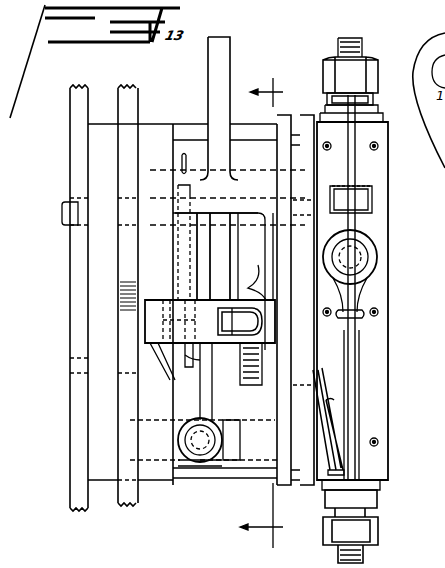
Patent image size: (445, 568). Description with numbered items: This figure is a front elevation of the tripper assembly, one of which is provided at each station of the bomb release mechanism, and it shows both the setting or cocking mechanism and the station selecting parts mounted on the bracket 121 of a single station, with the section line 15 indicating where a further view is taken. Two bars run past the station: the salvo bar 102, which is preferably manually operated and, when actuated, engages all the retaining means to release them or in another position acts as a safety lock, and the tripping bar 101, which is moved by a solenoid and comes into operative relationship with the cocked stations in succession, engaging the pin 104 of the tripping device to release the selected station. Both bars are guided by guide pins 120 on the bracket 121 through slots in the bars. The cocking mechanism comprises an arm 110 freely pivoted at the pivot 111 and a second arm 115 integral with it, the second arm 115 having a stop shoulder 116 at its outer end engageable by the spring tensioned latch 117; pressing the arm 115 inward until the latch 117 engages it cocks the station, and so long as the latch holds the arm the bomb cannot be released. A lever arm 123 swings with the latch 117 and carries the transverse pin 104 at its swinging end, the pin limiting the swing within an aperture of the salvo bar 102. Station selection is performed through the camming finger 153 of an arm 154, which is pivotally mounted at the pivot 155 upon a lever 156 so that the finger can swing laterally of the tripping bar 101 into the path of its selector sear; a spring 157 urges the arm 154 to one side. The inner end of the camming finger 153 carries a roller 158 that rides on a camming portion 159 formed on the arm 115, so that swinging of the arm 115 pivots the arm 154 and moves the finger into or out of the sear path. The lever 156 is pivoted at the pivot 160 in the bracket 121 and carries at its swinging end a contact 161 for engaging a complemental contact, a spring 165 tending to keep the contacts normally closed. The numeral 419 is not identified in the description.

The section line 15- 15 is at (272, 313).
The tripping bar 101 is at (138, 112).
The salvo bar 102 is at (78, 291).
The pin 104 is at (60, 212).
The arm 110 is at (225, 68).
The pivot 111 is at (444, 193).
The second arm 115 is at (335, 299).
The stop shoulder 116 is at (215, 238).
The latch 117 is at (215, 270).
The guide pins 120 is at (387, 203).
The bracket 121 is at (187, 132).
The lever arm 123 is at (182, 260).
The camming finger 153 is at (150, 330).
The arm 154 is at (200, 393).
The pivot 155 is at (168, 470).
The lever 156 is at (245, 468).
The spring 157 is at (246, 422).
The roller 158 is at (257, 323).
The camming portion 159 is at (250, 287).
The pivot 160 is at (348, 448).
The contact 161 is at (368, 245).
The spring 165 is at (347, 407).
The spring 419 is at (240, 383).